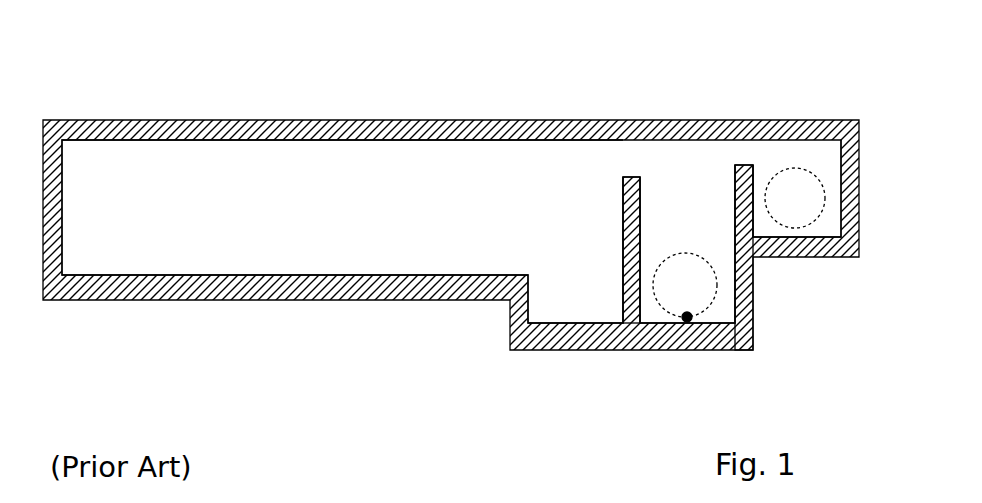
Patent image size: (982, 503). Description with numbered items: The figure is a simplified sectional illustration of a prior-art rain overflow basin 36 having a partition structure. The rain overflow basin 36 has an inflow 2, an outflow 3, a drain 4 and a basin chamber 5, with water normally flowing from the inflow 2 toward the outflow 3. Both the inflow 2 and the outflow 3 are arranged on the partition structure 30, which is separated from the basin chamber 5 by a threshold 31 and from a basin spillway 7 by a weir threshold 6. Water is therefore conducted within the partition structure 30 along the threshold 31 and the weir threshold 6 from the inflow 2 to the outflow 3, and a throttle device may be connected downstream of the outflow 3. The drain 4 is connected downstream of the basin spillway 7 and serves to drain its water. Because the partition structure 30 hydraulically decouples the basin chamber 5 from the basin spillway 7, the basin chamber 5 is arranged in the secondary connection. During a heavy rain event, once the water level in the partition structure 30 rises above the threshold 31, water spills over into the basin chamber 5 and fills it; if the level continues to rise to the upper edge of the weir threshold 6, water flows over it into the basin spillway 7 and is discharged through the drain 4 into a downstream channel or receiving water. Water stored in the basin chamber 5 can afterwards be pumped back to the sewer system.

The rain overflow basin 36 is at (440, 32).
The basin chamber 5 is at (270, 245).
The threshold 31 is at (630, 177).
The partition structure 30 is at (687, 157).
The weir threshold 6 is at (745, 167).
The basin spillway 7 is at (812, 150).
The inflow 2 is at (718, 283).
The drain 4 is at (805, 230).
The outflow 3 is at (687, 317).